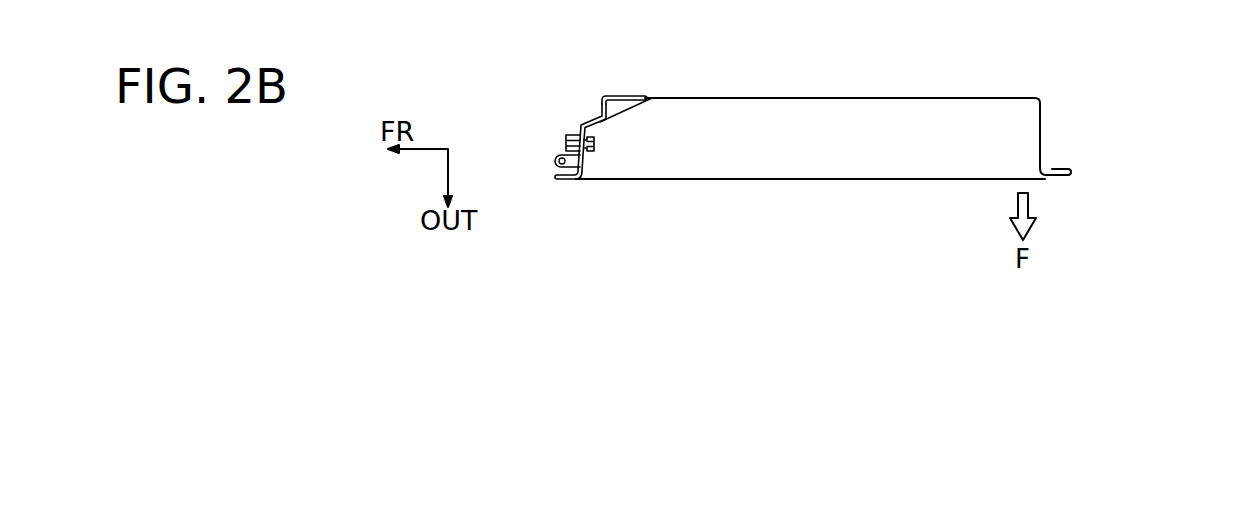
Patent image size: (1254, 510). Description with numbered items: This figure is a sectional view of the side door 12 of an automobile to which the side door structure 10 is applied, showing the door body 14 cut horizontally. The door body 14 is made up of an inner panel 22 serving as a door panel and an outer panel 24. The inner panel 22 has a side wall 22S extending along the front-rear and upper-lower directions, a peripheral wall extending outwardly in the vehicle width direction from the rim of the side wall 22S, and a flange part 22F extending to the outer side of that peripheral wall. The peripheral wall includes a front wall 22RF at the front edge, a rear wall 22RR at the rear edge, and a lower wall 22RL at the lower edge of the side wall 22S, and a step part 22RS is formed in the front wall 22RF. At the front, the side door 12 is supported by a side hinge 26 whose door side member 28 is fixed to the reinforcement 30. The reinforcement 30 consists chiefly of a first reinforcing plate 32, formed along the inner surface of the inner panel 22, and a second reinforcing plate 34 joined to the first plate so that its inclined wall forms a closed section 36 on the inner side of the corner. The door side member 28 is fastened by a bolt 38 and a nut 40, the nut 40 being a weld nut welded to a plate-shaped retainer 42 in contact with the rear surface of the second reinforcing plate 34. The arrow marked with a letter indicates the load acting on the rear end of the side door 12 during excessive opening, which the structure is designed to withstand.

The side door structure 10 is at (613, 125).
The side door 12 is at (929, 235).
The door body 14 is at (913, 197).
The inner panel 22 is at (849, 96).
The side wall 22S is at (795, 97).
The lower wall 22RL is at (960, 118).
The rear wall 22RR is at (1042, 147).
The front wall 22RF is at (578, 123).
The step part 22RS is at (588, 119).
The flange part 22F is at (1052, 175).
The outer panel 24 is at (830, 182).
The side hinge 26 is at (551, 162).
The door side member 28 is at (557, 157).
The reinforcement 30 is at (704, 84).
The first reinforcing plate 32 is at (620, 98).
The second reinforcing plate 34 is at (631, 113).
The closed section 36 is at (643, 98).
The bolt 38 is at (566, 138).
The nut 40 is at (589, 147).
The retainer 42 is at (584, 164).